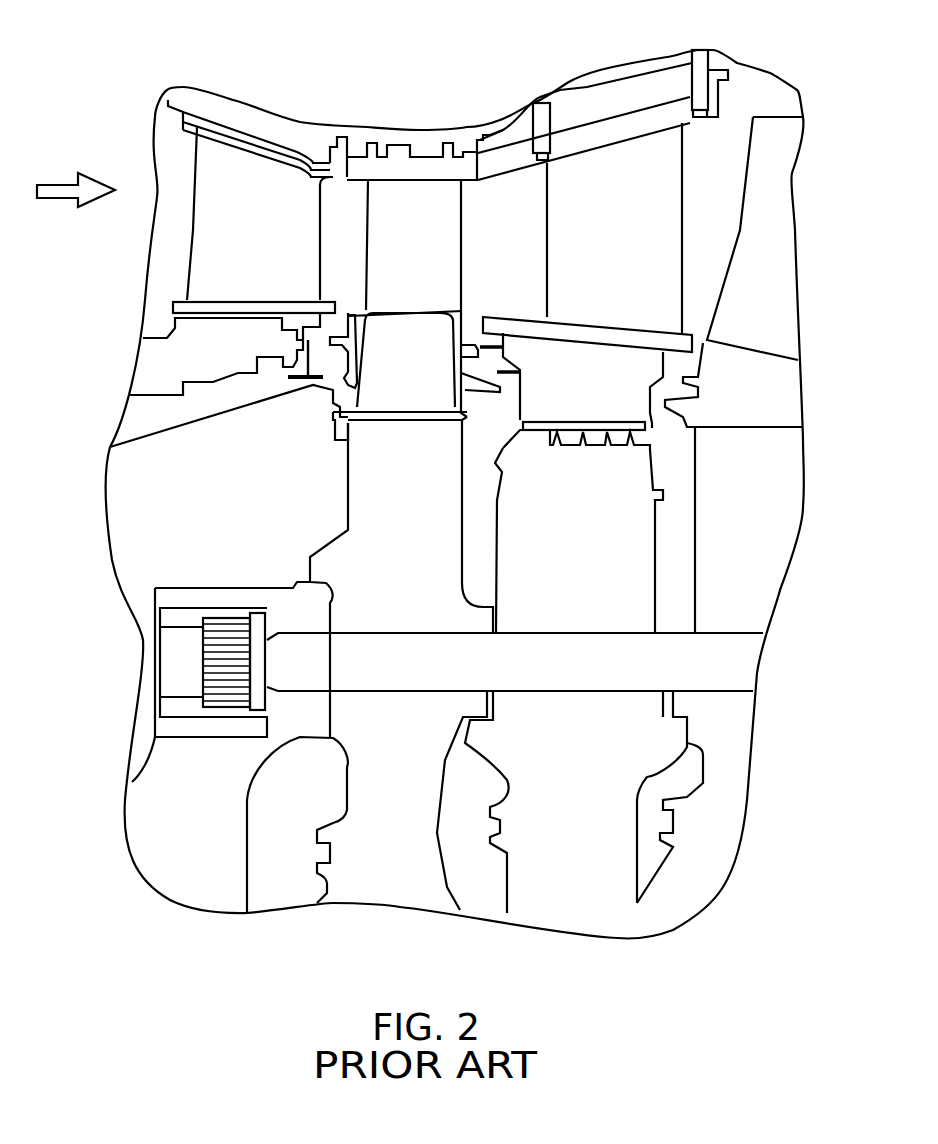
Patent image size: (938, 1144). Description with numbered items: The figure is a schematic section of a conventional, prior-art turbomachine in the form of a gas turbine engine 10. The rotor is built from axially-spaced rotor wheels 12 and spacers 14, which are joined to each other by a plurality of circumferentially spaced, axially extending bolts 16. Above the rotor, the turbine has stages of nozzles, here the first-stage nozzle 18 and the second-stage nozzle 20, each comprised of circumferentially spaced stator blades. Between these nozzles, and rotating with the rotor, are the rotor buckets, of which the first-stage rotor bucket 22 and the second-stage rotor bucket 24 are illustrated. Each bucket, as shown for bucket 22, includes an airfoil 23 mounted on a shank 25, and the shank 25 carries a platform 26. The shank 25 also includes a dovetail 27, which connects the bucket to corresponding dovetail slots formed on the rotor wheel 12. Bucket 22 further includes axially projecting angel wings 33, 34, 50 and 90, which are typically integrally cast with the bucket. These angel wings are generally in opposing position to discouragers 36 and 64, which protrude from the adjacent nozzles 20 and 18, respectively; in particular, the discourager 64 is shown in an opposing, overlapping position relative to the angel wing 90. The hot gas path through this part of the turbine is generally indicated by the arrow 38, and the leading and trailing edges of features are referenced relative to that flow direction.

The gas turbine engine 10 is at (367, 72).
The rotor wheel 12 is at (373, 822).
The spacer 14 is at (565, 822).
The bolt 16 is at (717, 670).
The first-stage nozzle 18 is at (239, 251).
The second-stage nozzle 20 is at (602, 251).
The first-stage rotor bucket 22 is at (395, 251).
The airfoil 23 is at (462, 244).
The second-stage rotor bucket 24 is at (752, 294).
The shank 25 is at (395, 396).
The platform 26 is at (418, 309).
The dovetail 27 is at (387, 526).
The angel wing 33 is at (473, 352).
The angel wing 34 is at (478, 382).
The discourager 36 is at (512, 360).
The arrow 38 is at (58, 199).
The angel wing 50 is at (345, 322).
The discourager 64 is at (305, 383).
The angel wing 90 is at (330, 388).